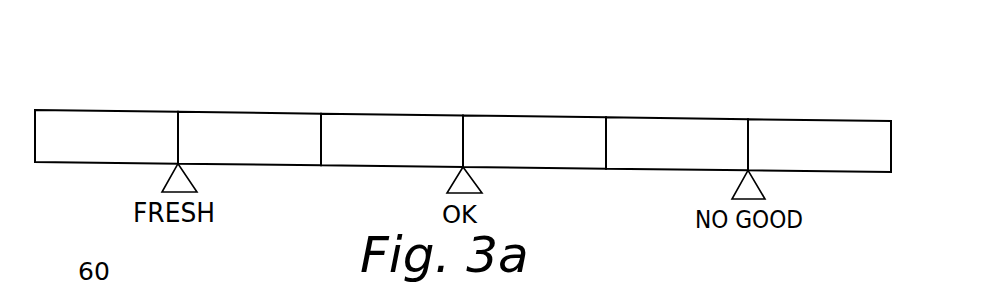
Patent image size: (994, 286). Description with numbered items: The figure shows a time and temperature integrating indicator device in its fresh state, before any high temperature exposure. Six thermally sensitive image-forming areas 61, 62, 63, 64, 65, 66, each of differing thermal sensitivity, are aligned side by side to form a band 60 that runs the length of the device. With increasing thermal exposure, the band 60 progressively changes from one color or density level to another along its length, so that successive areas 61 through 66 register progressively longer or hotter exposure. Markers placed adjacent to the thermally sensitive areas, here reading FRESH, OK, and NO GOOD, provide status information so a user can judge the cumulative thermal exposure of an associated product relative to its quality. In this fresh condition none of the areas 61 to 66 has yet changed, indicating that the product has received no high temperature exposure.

The band 60 is at (77, 102).
The thermally sensitive area 61 is at (142, 120).
The thermally sensitive area 62 is at (295, 120).
The thermally sensitive area 63 is at (429, 124).
The thermally sensitive area 64 is at (576, 124).
The thermally sensitive area 65 is at (712, 128).
The thermally sensitive area 66 is at (862, 127).